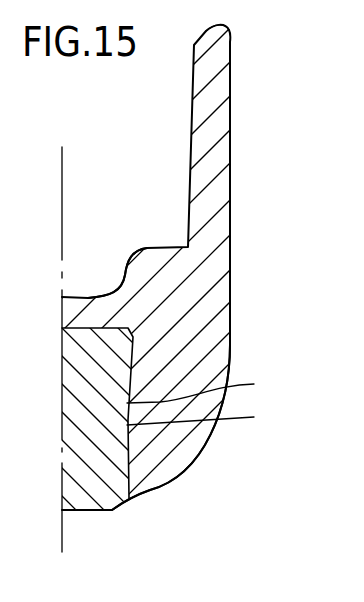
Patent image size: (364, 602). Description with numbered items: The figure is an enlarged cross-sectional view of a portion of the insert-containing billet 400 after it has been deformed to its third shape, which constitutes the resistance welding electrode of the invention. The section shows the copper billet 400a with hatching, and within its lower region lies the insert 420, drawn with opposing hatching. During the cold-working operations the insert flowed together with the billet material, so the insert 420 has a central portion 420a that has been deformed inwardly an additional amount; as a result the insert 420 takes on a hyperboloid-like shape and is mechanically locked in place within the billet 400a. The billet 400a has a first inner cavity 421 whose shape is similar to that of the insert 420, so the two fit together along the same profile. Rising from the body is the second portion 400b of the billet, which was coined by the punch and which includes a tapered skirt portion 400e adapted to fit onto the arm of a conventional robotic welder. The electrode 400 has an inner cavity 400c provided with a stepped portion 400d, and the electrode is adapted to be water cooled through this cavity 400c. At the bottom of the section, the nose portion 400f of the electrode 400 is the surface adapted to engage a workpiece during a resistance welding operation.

The insert-containing billet 400 is at (223, 331).
The billet 400a is at (220, 298).
The second portion 400b is at (215, 217).
The inner cavity 400c is at (196, 106).
The stepped portion 400d is at (147, 262).
The tapered skirt portion 400e is at (215, 159).
The nose portion 400f is at (184, 473).
The insert 420 is at (92, 500).
The central portion 420a is at (221, 420).
The first inner cavity 421 is at (216, 387).